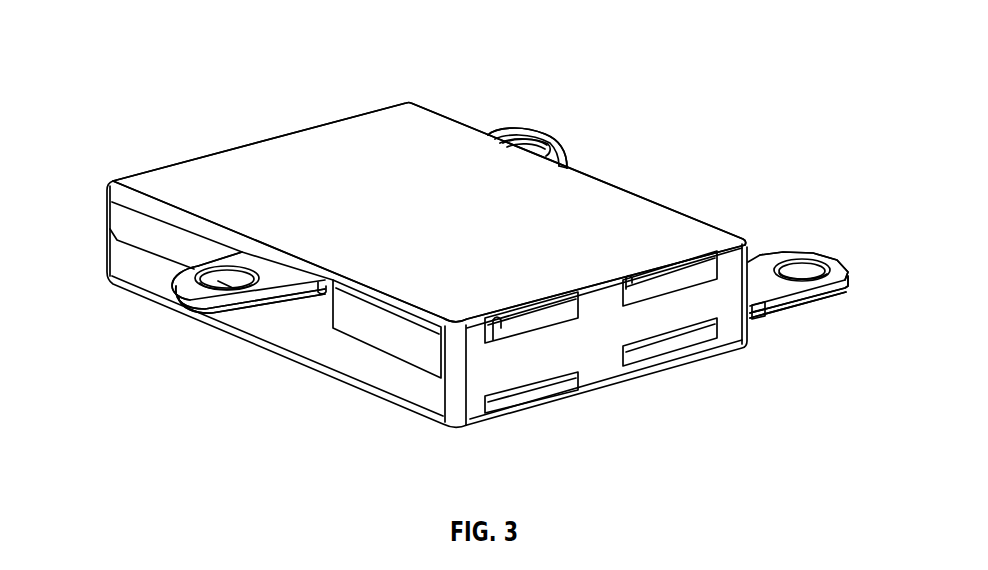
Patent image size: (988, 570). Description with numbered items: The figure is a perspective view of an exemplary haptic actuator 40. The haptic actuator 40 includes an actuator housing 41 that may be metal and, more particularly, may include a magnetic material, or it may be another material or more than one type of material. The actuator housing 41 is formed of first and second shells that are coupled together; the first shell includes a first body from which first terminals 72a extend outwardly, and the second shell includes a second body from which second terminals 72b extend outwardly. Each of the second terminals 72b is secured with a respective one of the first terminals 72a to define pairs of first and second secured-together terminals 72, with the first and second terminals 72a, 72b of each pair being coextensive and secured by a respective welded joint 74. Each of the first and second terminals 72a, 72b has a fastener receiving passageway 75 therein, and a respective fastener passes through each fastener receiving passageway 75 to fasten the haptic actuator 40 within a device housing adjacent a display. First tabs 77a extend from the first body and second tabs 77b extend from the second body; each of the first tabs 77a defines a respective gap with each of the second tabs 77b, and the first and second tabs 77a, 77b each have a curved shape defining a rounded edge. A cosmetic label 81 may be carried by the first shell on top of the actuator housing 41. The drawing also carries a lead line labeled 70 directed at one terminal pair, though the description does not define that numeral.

The haptic actuator 40 is at (201, 104).
The actuator housing 41 is at (127, 179).
The mounting feature 70 is at (216, 260).
The pairs of first and second secured-together terminals 72 is at (522, 124).
The first terminals 72a is at (550, 140).
The second terminals 72b is at (560, 167).
The welded joint 74 is at (803, 300).
The fastener receiving passageway 75 is at (798, 275).
The first tabs 77a is at (677, 273).
The second tabs 77b is at (668, 376).
The cosmetic label 81 is at (348, 147).